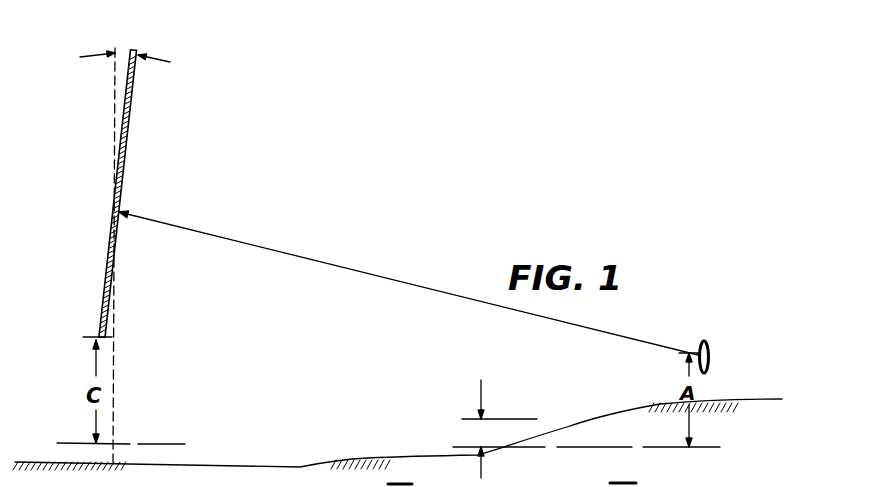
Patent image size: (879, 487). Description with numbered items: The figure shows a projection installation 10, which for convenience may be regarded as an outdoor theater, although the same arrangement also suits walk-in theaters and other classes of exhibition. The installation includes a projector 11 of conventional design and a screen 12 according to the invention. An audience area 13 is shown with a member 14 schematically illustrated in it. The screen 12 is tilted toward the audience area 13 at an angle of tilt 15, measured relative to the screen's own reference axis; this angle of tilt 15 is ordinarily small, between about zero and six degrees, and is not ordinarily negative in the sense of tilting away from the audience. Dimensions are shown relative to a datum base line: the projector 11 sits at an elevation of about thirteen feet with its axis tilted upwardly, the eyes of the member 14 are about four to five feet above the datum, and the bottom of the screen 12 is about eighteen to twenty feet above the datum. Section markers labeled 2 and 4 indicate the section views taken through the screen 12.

The projection installation 10 is at (405, 250).
The projector 11 is at (750, 342).
The screen 12 is at (124, 168).
The audience area 13 is at (371, 459).
The member 14 is at (509, 419).
The angle of tilt 15 is at (132, 43).
The section line 2- 2 is at (193, 147).
The section line 4- 4 is at (263, 405).